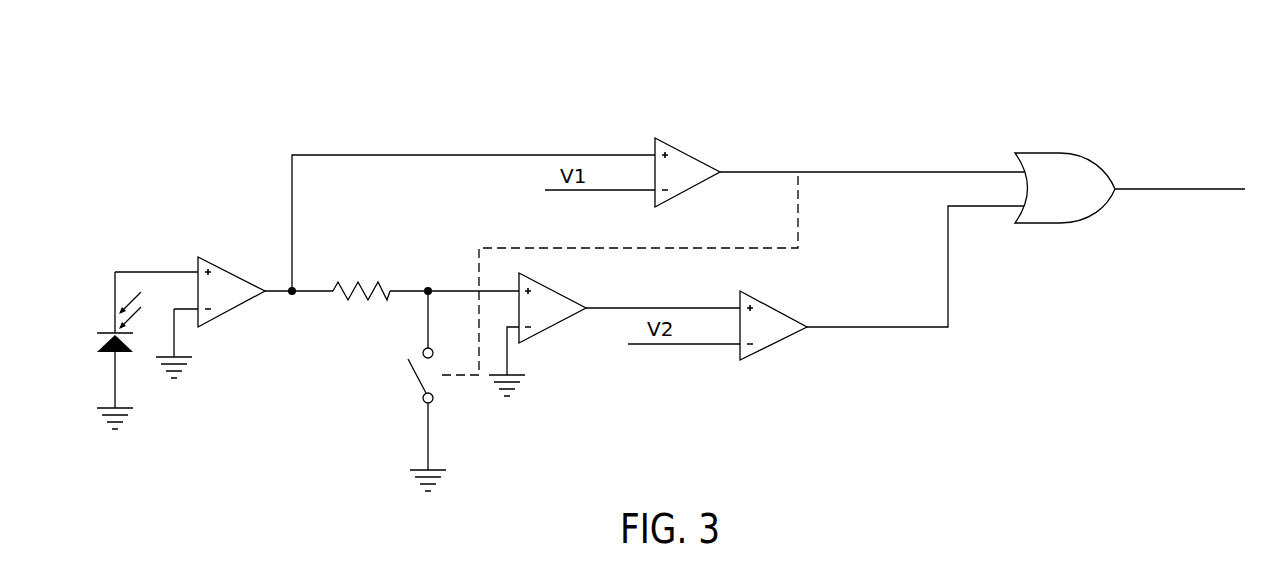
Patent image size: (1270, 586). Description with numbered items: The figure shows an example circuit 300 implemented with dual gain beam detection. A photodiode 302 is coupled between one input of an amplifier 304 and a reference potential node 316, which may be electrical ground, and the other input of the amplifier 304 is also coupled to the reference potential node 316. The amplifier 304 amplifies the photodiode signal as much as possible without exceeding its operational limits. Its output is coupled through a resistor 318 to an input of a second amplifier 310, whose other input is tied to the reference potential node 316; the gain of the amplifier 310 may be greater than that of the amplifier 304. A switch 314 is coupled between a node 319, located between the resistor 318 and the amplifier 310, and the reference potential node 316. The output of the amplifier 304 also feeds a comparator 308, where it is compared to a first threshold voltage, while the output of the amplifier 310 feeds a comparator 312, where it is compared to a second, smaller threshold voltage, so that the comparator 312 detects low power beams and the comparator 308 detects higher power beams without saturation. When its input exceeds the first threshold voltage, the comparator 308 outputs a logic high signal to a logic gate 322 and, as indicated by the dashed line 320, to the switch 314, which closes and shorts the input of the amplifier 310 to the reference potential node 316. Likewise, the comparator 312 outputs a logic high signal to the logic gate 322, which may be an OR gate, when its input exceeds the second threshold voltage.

The circuit 300 is at (241, 68).
The photodiode 302 is at (110, 332).
The amplifier 304 is at (212, 260).
The comparator 308 is at (680, 148).
The amplifier 310 is at (530, 343).
The comparator 312 is at (758, 352).
The switch 314 is at (415, 372).
The reference potential node 316 is at (115, 432).
The resistor 318 is at (368, 300).
The node 319 is at (402, 290).
The dashed line 320 is at (518, 248).
The logic gate 322 is at (1045, 152).